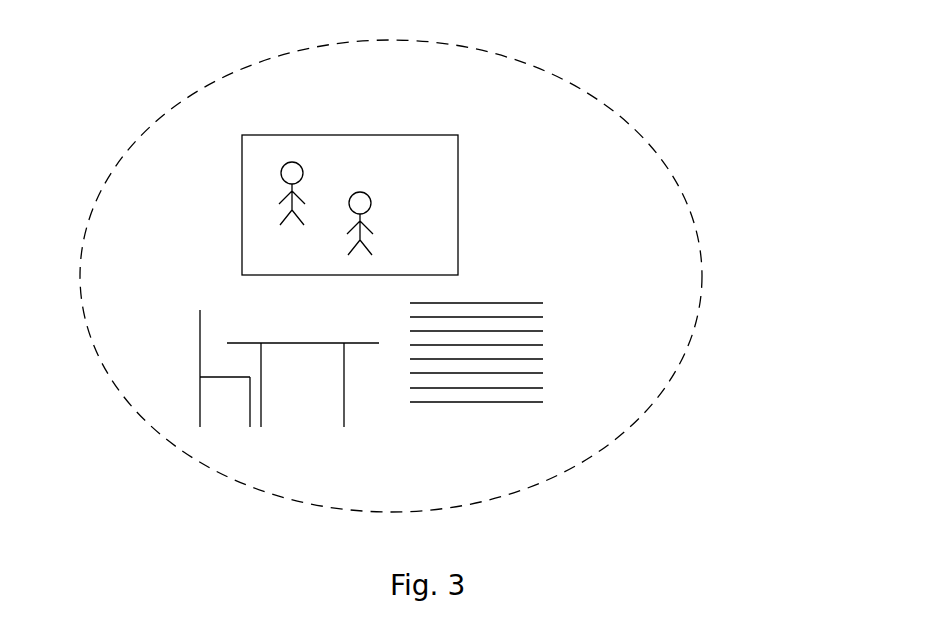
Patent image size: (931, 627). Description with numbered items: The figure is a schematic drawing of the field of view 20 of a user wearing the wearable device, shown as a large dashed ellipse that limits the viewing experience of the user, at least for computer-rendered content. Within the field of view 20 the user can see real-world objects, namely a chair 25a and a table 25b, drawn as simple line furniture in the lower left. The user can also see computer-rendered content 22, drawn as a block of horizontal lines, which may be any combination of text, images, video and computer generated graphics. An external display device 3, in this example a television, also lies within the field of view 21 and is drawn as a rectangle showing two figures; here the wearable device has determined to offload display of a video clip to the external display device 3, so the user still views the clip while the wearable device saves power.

The external display device 3 is at (412, 135).
The field of view 20 is at (690, 210).
The field of view 21 is at (383, 203).
The computer-rendered content 22 is at (548, 343).
The chair 25a is at (200, 333).
The table 25b is at (345, 400).